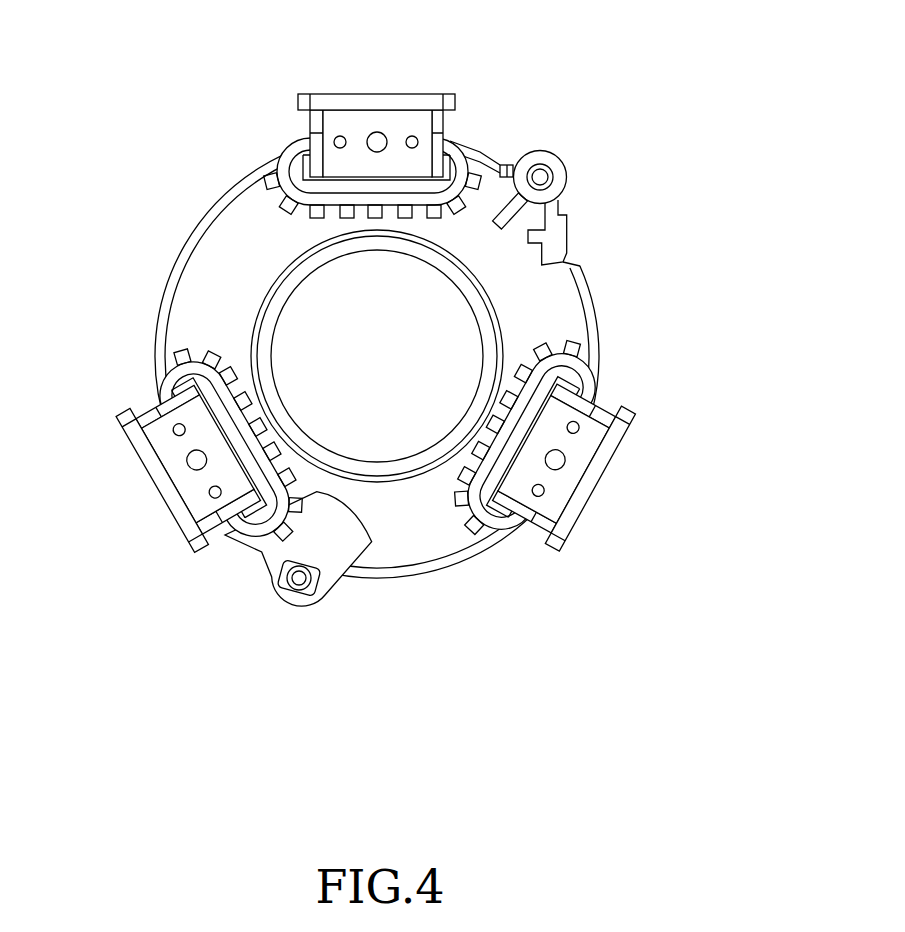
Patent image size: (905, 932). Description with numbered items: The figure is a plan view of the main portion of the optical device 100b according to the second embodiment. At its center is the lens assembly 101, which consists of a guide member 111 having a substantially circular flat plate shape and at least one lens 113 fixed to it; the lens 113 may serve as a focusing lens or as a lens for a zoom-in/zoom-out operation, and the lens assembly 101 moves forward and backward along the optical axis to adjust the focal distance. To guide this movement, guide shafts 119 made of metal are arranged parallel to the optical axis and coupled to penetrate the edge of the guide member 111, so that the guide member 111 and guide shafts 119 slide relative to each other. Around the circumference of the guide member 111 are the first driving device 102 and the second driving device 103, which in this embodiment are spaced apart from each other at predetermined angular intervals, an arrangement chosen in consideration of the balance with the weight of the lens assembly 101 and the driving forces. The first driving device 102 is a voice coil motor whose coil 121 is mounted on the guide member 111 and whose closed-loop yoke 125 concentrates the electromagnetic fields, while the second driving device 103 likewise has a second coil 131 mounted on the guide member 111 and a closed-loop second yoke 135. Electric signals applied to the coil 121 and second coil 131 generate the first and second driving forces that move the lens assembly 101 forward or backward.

The optical device 100b is at (395, 350).
The lens assembly 101 is at (592, 235).
The first driving device 102 is at (365, 467).
The second driving device 103 is at (347, 118).
The guide member 111 is at (562, 298).
The lens 113 is at (327, 322).
The guide shaft 119 is at (540, 172).
The coil 121 is at (573, 364).
The yoke 125 is at (140, 437).
The second coil 131 is at (283, 173).
The second yoke 135 is at (362, 95).